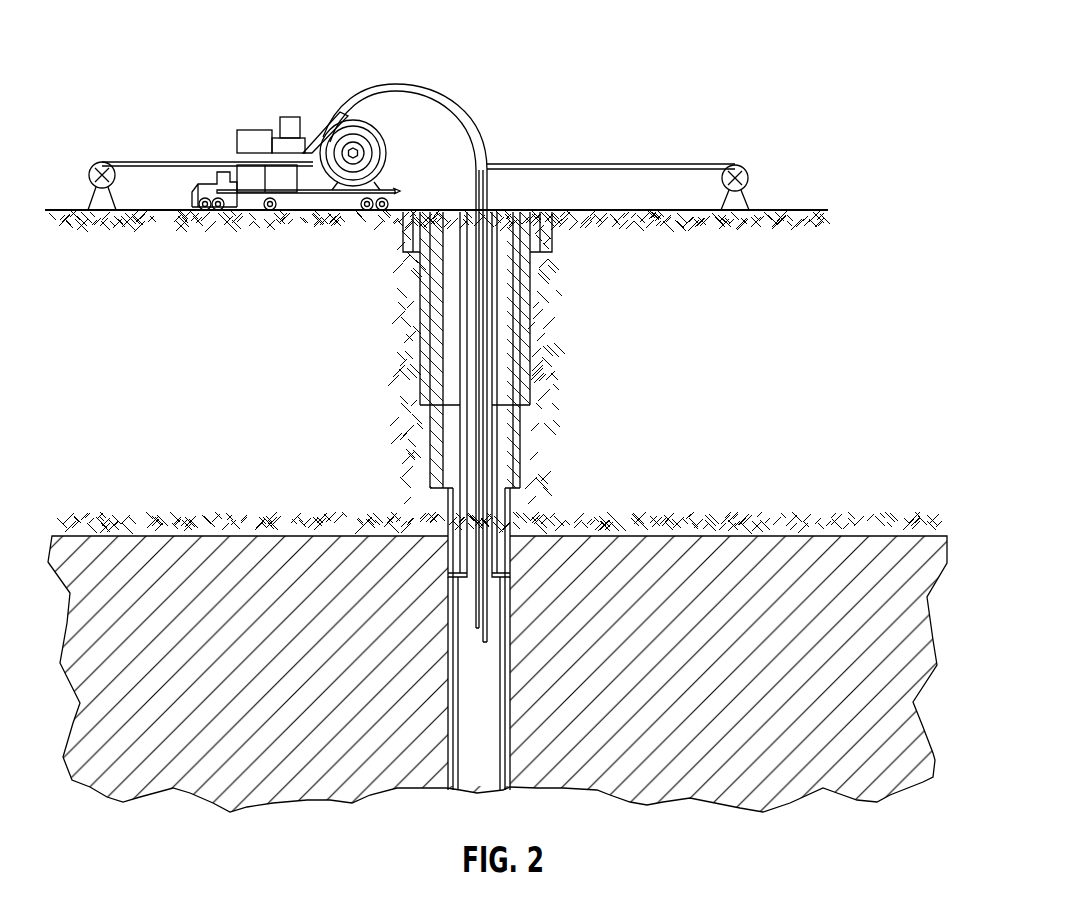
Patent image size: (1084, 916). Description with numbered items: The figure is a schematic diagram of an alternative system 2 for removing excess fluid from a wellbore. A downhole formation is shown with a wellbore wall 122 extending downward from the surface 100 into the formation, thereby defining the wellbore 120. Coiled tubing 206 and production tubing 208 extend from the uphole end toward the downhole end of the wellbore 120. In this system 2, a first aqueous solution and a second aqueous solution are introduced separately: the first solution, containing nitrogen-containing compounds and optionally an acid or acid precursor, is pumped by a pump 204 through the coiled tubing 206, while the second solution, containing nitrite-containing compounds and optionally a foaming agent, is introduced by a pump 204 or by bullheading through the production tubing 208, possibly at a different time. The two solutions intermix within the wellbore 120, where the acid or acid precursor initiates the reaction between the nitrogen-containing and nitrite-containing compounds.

The system 2 is at (170, 49).
The surface 100 is at (770, 210).
The wellbore 120 is at (500, 769).
The wellbore wall 122 is at (531, 467).
The pump 204 is at (104, 162).
The coiled tubing 206 is at (353, 120).
The production tubing 208 is at (513, 317).